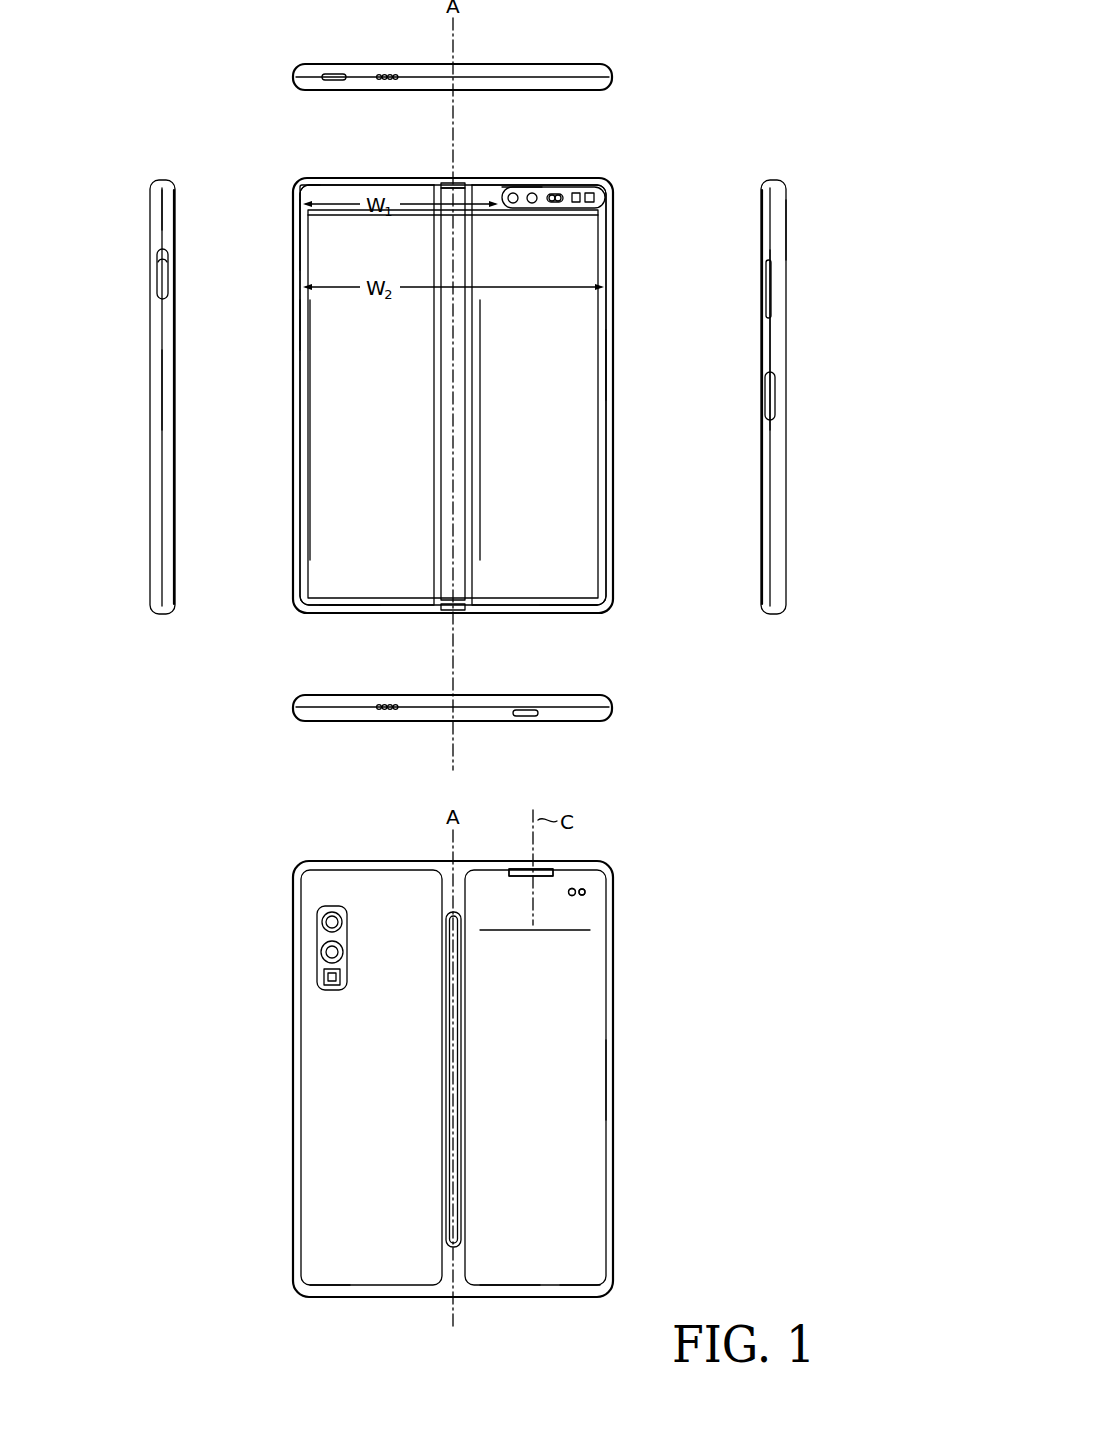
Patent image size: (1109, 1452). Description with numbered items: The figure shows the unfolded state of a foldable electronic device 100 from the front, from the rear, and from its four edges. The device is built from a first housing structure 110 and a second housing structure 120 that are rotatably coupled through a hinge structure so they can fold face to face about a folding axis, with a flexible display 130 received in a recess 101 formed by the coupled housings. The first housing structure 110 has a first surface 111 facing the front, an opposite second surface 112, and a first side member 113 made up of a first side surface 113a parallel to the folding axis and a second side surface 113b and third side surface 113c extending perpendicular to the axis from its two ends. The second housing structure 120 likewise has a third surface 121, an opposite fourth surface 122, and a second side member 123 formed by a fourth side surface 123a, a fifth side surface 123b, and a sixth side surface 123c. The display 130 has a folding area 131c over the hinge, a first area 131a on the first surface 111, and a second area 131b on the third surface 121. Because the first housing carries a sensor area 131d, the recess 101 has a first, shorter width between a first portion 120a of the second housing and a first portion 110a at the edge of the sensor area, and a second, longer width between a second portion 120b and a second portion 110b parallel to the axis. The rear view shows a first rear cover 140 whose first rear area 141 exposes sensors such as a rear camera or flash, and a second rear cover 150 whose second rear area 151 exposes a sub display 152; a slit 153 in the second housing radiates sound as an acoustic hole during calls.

The electronic device 100 is at (628, 71).
The recess 101 is at (344, 526).
The first housing structure 110 is at (596, 64).
The first portion of first housing structure 110a is at (497, 200).
The second portion of first housing structure 110b is at (606, 365).
The first surface 111 is at (565, 603).
The second surface 112 is at (330, 1286).
The first side member 113 is at (612, 488).
The first side surface 113a is at (612, 302).
The second side surface 113b is at (504, 64).
The third side surface 113c is at (500, 615).
The second housing structure 120 is at (337, 64).
The first portion of second housing structure 120a is at (298, 183).
The second portion of second housing structure 120b is at (300, 323).
The third surface 121 is at (350, 603).
The fourth surface 122 is at (588, 1286).
The second side member 123 is at (300, 437).
The fourth side surface 123a is at (300, 229).
The fifth side surface 123b is at (412, 64).
The sixth side surface 123c is at (400, 615).
The display 130 is at (318, 481).
The first area 131a is at (568, 392).
The second area 131b is at (342, 350).
The folding area 131c is at (449, 247).
The sensor area 131d is at (560, 195).
The first rear cover 140 is at (420, 1286).
The first rear area 141 is at (318, 934).
The second rear cover 150 is at (497, 1286).
The second rear area 151 is at (558, 948).
The sub display 152 is at (606, 1080).
The slit 153 is at (548, 868).